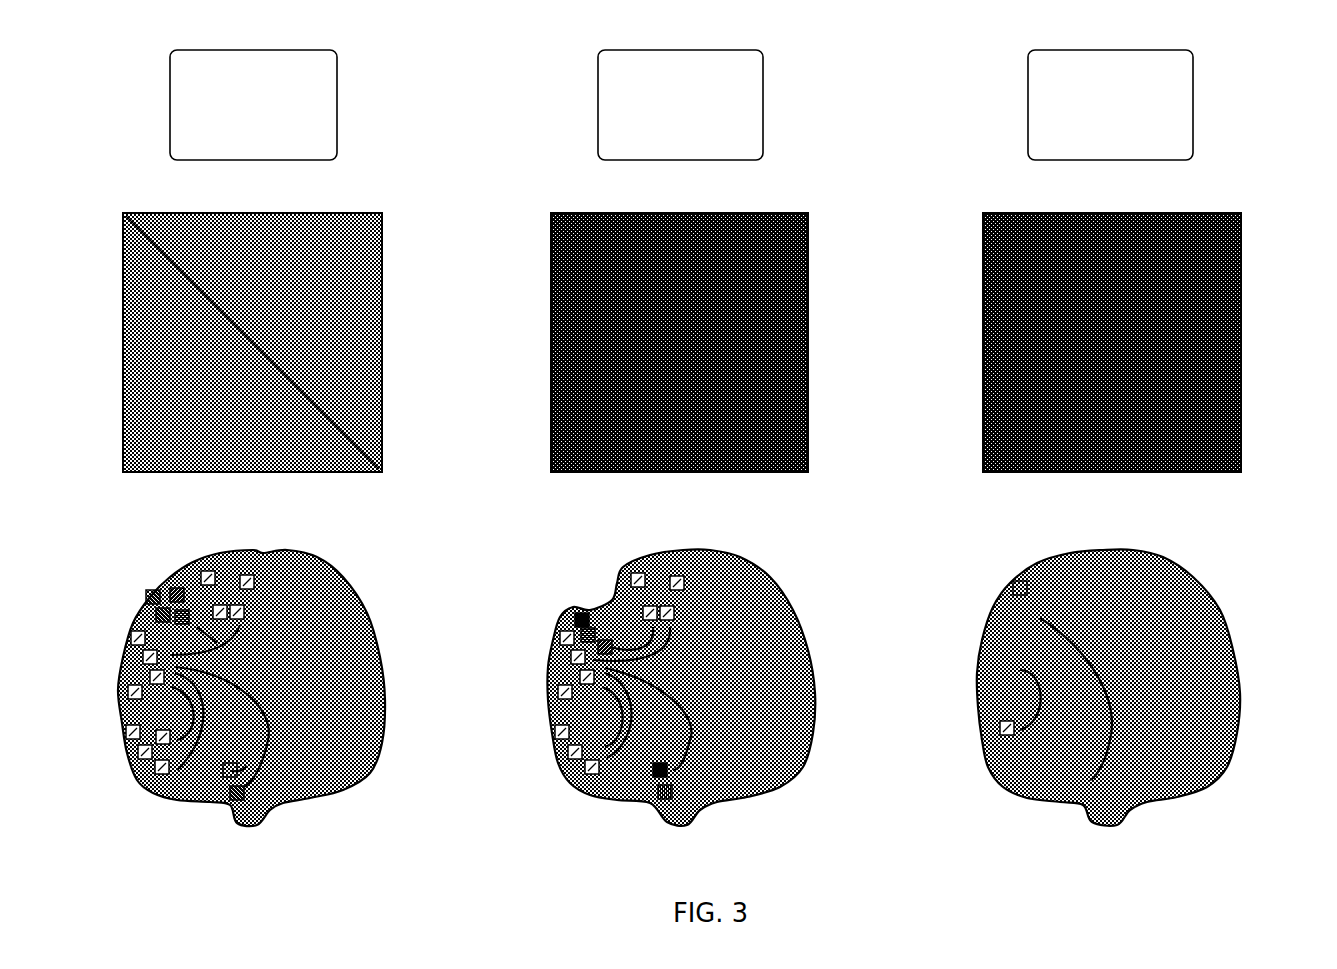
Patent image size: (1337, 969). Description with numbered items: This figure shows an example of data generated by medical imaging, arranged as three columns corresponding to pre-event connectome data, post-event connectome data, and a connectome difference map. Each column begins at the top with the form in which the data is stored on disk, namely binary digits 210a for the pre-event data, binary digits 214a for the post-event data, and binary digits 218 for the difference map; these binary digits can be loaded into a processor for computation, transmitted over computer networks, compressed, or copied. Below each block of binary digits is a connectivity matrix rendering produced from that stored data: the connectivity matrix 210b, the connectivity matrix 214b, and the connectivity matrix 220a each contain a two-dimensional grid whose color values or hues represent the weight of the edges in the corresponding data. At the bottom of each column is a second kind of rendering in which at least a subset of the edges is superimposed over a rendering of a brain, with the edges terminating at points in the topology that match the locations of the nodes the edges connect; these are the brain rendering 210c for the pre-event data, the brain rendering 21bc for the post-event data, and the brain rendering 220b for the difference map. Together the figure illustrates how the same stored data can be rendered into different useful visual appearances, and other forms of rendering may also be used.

The binary digits of pre-event connectome data 210a is at (337, 107).
The connectivity matrix rendering of pre-event connectome data 210b is at (382, 352).
The brain rendering of pre-event connectome data 210c is at (298, 537).
The binary digits of post-event connectome data 214a is at (763, 105).
The connectivity matrix rendering of post-event connectome data 214b is at (808, 352).
The second brain connectivity visualization 21bc is at (726, 537).
The binary digits of connectome difference map 218 is at (1192, 28).
The connectivity matrix rendering of connectome difference map 220a is at (1241, 352).
The brain rendering of connectome difference map 220b is at (1154, 537).